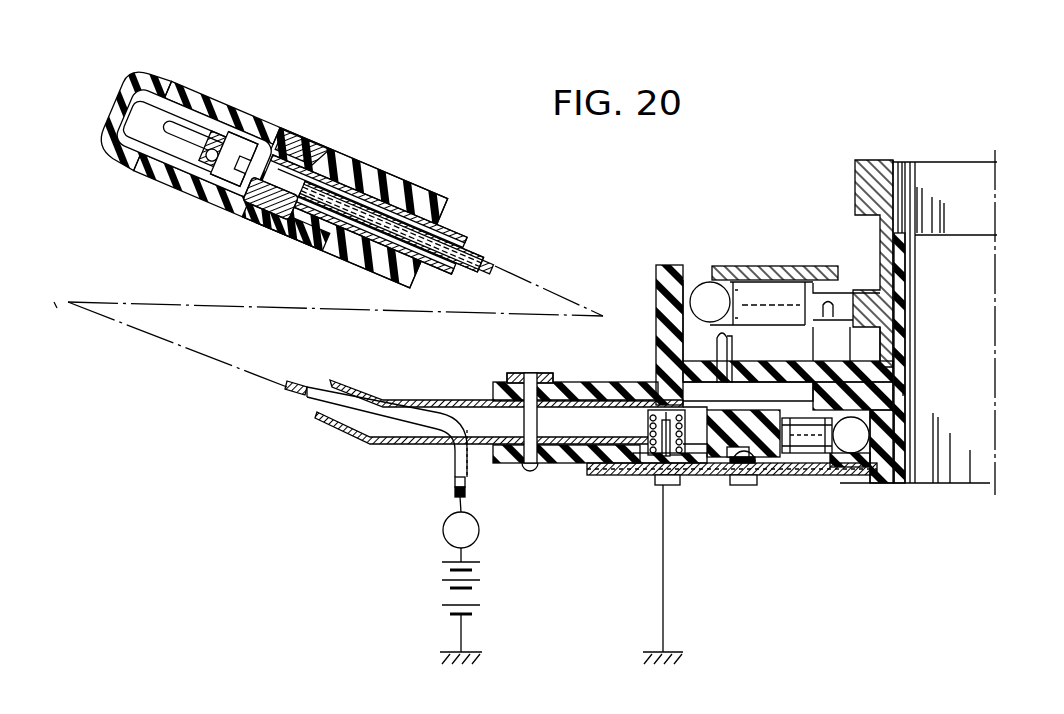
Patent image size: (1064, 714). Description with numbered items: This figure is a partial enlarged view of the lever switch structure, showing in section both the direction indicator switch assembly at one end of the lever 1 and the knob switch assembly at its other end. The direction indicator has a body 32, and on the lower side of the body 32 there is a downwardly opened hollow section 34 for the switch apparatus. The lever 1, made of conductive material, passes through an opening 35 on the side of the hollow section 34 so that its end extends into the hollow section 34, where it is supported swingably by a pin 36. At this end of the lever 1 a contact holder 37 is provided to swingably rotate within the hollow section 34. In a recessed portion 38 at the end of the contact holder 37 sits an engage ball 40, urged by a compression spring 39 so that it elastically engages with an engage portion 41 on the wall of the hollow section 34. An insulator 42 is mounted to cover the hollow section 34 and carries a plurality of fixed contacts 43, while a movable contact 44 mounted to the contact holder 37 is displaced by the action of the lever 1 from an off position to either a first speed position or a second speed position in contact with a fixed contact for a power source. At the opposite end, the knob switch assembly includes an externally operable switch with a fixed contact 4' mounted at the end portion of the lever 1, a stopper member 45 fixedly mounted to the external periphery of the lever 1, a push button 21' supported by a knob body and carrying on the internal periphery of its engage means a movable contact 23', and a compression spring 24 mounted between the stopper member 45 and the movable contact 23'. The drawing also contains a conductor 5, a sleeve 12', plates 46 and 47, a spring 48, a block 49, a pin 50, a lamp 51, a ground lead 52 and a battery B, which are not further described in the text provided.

The lever 1 is at (360, 393).
The fixed contact 4' is at (362, 187).
The conductor 5 is at (473, 248).
The probe body 12' is at (344, 205).
The push button 21' is at (211, 157).
The movable contact 23' is at (238, 108).
The compression spring 24 is at (253, 140).
The body 32 is at (895, 445).
The hollow section 34 is at (778, 362).
The opening 35 is at (560, 470).
The pin 36 is at (562, 383).
The contact holder 37 is at (813, 475).
The recessed portion 38 is at (833, 470).
The compression spring 39 is at (903, 390).
The engage ball 40 is at (880, 475).
The engage portion 41 is at (857, 475).
The insulator 42 is at (692, 475).
The fixed contacts 43 is at (740, 462).
The movable contact 44 is at (767, 480).
The stopper member 45 is at (270, 228).
The plate 46 is at (607, 475).
The plate 47 is at (627, 475).
The spring 48 is at (647, 430).
The block 49 is at (655, 360).
The pin 50 is at (657, 463).
The lamp 51 is at (445, 531).
The ground lead 52 is at (660, 578).
The battery B is at (450, 588).